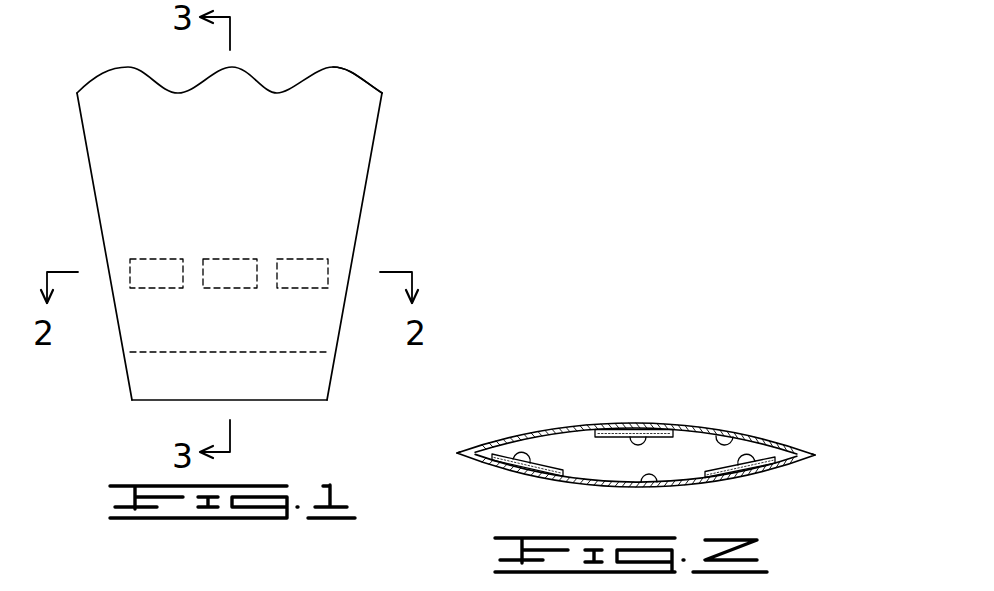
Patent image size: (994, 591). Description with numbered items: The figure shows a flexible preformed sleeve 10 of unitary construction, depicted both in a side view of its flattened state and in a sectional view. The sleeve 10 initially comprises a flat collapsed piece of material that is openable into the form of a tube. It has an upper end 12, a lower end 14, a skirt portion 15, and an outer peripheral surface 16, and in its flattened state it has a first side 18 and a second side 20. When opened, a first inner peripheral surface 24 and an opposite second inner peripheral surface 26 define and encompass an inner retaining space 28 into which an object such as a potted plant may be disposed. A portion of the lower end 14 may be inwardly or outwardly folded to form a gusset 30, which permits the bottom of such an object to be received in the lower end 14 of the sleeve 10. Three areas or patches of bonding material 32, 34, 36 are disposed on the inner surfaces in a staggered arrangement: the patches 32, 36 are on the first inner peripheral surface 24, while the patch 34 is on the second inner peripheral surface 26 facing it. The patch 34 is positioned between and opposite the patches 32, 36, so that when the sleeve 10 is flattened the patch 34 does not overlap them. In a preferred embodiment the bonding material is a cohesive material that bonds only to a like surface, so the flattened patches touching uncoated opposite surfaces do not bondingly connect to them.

In FIG. 1, the sleeve 10 is at (260, 235).
In FIG. 2, the sleeve 10 is at (639, 434).
In FIG. 1, the upper end 12 is at (243, 72).
In FIG. 1, the lower end 14 is at (183, 400).
In FIG. 1, the skirt portion 15 is at (360, 80).
In FIG. 1, the outer peripheral surface 16 is at (231, 235).
In FIG. 2, the outer peripheral surface 16 is at (543, 427).
In FIG. 1, the first side 18 is at (88, 172).
In FIG. 2, the first side 18 is at (457, 453).
In FIG. 1, the second side 20 is at (375, 142).
In FIG. 2, the second side 20 is at (817, 455).
In FIG. 2, the first inner peripheral surface 24 is at (655, 485).
In FIG. 2, the second inner peripheral surface 26 is at (740, 433).
In FIG. 2, the inner retaining space 28 is at (592, 452).
In FIG. 1, the gusset 30 is at (300, 352).
In FIG. 1, the bonding material patch 32 is at (158, 278).
In FIG. 2, the bonding material patch 32 is at (512, 462).
In FIG. 1, the bonding material patch 34 is at (245, 278).
In FIG. 2, the bonding material patch 34 is at (648, 432).
In FIG. 1, the bonding material patch 36 is at (318, 270).
In FIG. 2, the bonding material patch 36 is at (757, 470).